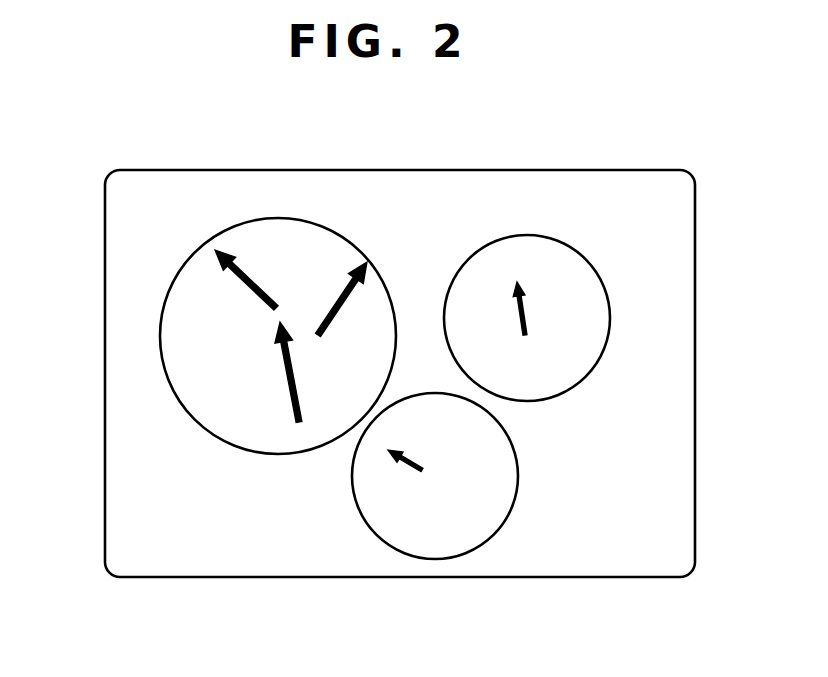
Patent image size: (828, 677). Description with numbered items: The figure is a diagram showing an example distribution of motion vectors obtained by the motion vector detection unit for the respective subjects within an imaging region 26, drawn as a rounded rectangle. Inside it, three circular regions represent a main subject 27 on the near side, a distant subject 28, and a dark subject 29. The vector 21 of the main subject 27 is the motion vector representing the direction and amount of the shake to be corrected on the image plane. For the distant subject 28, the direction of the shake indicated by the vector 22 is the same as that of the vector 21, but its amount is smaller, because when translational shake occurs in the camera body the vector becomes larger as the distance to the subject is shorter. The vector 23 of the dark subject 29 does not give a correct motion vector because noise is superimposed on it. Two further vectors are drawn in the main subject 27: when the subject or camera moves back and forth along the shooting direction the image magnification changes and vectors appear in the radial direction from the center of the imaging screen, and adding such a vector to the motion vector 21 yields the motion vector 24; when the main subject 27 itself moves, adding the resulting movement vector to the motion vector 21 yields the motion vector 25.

The vector of the main subject 21 is at (289, 382).
The vector of the distant subject 22 is at (528, 318).
The vector of the dark subject 23 is at (410, 472).
The motion vector 24 is at (255, 280).
The motion vector 25 is at (336, 296).
The imaging region 26 is at (105, 512).
The main subject 27 is at (160, 331).
The distant subject 28 is at (527, 235).
The dark subject 29 is at (508, 517).